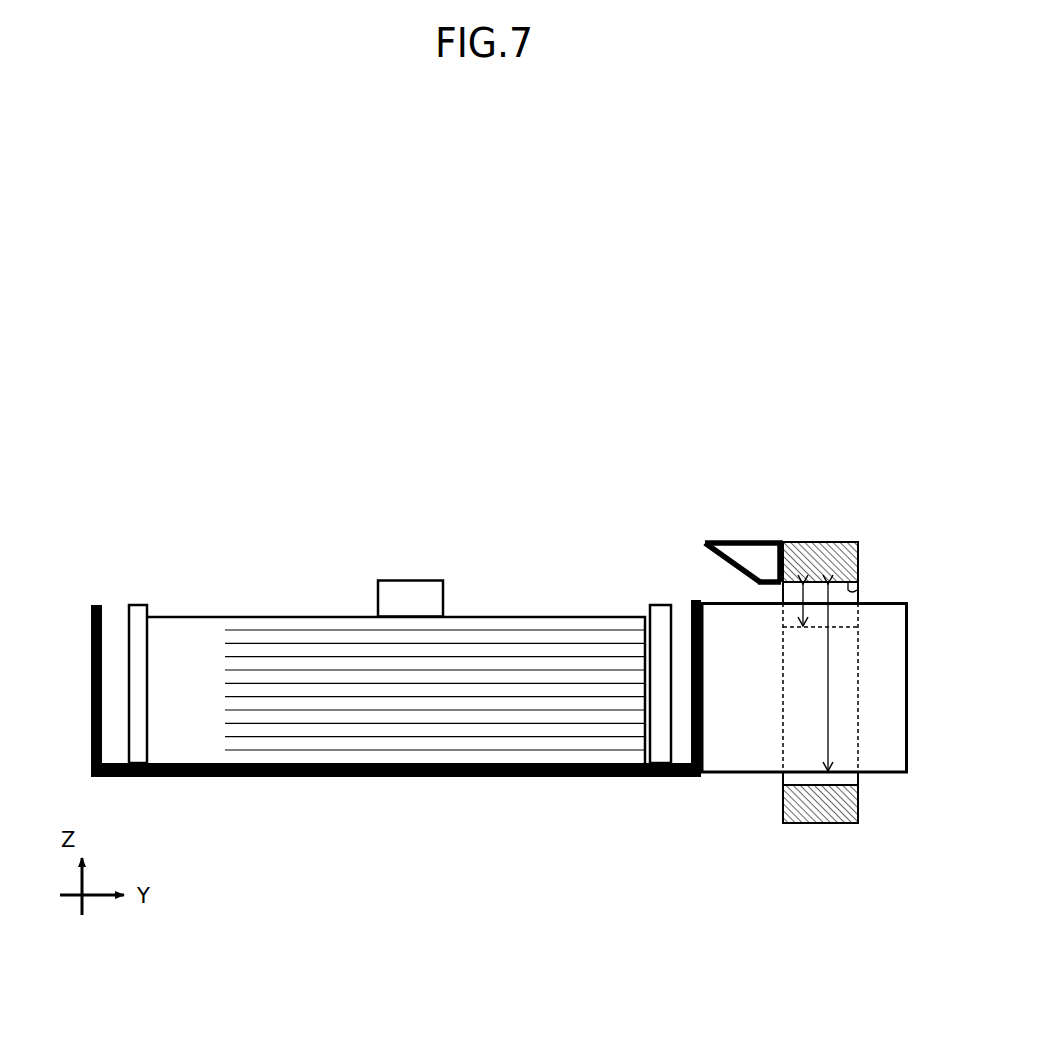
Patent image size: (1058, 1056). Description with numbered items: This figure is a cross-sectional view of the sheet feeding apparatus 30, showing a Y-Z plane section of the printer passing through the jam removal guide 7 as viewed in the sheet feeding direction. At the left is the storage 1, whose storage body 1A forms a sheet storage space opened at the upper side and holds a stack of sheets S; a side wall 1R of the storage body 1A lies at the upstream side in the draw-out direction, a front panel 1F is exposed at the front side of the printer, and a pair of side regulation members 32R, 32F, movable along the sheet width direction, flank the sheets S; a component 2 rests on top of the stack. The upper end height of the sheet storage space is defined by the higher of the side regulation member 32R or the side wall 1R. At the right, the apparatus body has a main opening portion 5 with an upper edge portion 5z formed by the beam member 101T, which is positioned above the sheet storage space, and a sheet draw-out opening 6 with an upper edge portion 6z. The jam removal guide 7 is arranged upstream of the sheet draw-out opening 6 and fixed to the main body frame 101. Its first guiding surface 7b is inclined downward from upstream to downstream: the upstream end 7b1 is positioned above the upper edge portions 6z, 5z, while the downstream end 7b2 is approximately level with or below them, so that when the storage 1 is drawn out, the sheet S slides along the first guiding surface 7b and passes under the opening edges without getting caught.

The storage 1 is at (286, 784).
The side wall 1R is at (92, 605).
The storage body 1A is at (548, 778).
The front panel 1F is at (733, 778).
The electronic component 2 is at (390, 580).
The main opening portion 5 is at (830, 725).
The upper edge portion 5z is at (852, 587).
The sheet draw-out opening 6 is at (783, 598).
The upper edge portion 6z is at (850, 590).
The jam removal guide 7 is at (733, 541).
The first guiding surface 7b is at (745, 573).
The upstream end 7b1 is at (738, 560).
The downstream end 7b2 is at (775, 580).
The sheet feeding apparatus 30 is at (428, 470).
The side regulation member 32R is at (138, 605).
The side regulation member 32F is at (648, 606).
The main body frame 101 is at (823, 532).
The beam member 101T is at (845, 548).
The sheet S is at (215, 617).